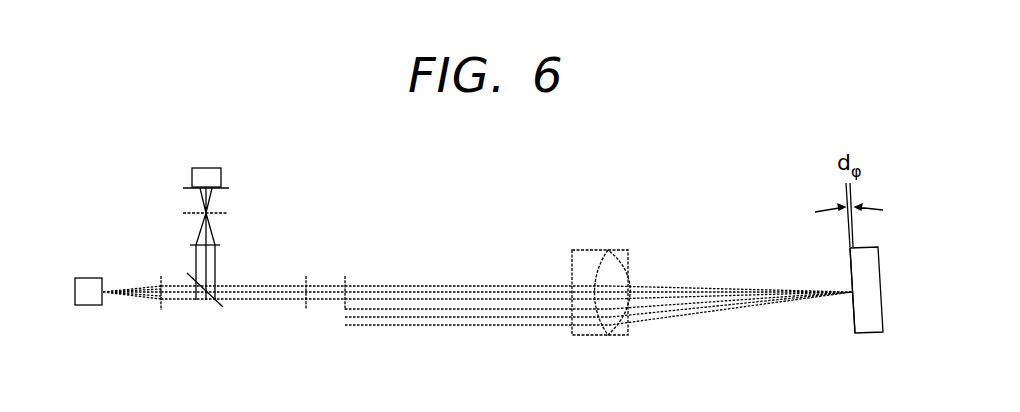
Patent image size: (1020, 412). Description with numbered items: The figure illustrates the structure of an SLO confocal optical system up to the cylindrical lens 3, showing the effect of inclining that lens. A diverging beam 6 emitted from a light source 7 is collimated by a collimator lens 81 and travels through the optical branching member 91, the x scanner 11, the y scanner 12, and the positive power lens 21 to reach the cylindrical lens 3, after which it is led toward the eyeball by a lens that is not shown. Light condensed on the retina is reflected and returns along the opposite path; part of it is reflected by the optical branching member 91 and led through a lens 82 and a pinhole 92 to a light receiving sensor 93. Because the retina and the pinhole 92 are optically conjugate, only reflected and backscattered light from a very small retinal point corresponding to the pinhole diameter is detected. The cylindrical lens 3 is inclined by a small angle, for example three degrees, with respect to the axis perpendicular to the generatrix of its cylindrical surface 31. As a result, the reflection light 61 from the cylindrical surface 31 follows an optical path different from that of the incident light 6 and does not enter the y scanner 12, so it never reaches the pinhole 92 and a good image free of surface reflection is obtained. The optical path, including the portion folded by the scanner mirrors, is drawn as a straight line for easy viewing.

The light source 7 is at (82, 277).
The diverging beam 6 is at (145, 286).
The collimator lens 81 is at (156, 310).
The optical branching member 91 is at (215, 310).
The lens 82 is at (217, 244).
The pinhole 92 is at (228, 212).
The light receiving sensor 93 is at (207, 167).
The x scanner 11 is at (306, 310).
The y scanner 12 is at (346, 278).
The reflection light 61 is at (450, 326).
The positive power lens 21 is at (592, 337).
The cylindrical surface 31 is at (857, 278).
The cylindrical lens 3 is at (867, 333).